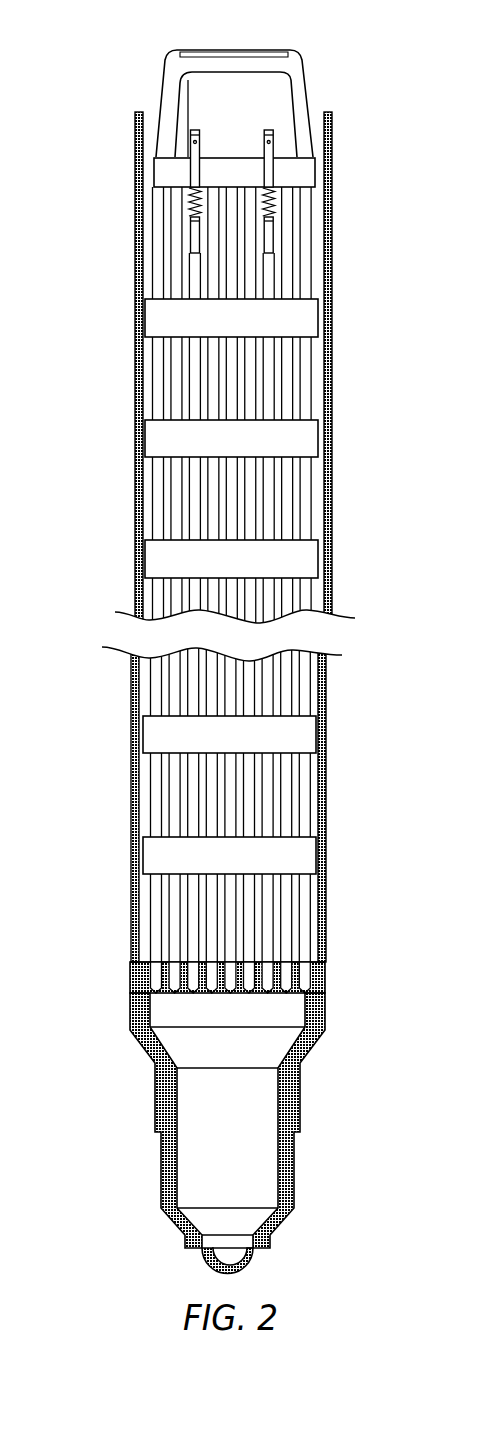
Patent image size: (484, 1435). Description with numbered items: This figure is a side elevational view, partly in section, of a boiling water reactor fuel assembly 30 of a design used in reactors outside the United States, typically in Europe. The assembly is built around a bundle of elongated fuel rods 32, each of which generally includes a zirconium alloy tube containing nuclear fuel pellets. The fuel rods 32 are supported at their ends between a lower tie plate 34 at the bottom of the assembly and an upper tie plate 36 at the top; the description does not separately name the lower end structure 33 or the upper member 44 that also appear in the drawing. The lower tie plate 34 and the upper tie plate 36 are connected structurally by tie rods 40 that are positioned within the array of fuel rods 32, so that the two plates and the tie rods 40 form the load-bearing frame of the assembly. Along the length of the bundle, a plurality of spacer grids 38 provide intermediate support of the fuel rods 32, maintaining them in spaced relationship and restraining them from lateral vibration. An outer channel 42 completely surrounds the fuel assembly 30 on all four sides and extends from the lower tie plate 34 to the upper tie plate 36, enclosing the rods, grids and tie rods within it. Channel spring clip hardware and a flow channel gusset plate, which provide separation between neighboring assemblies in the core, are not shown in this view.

The boiling water reactor fuel assembly 30 is at (82, 521).
The fuel rods 32 is at (152, 380).
The lower tie plate 33 is at (170, 997).
The lower tie plate 34 is at (308, 1058).
The upper tie plate 36 is at (154, 172).
The spacer grids 38 is at (150, 318).
The tie rods 40 is at (192, 252).
The outer channel 42 is at (131, 800).
The handle 44 is at (300, 58).